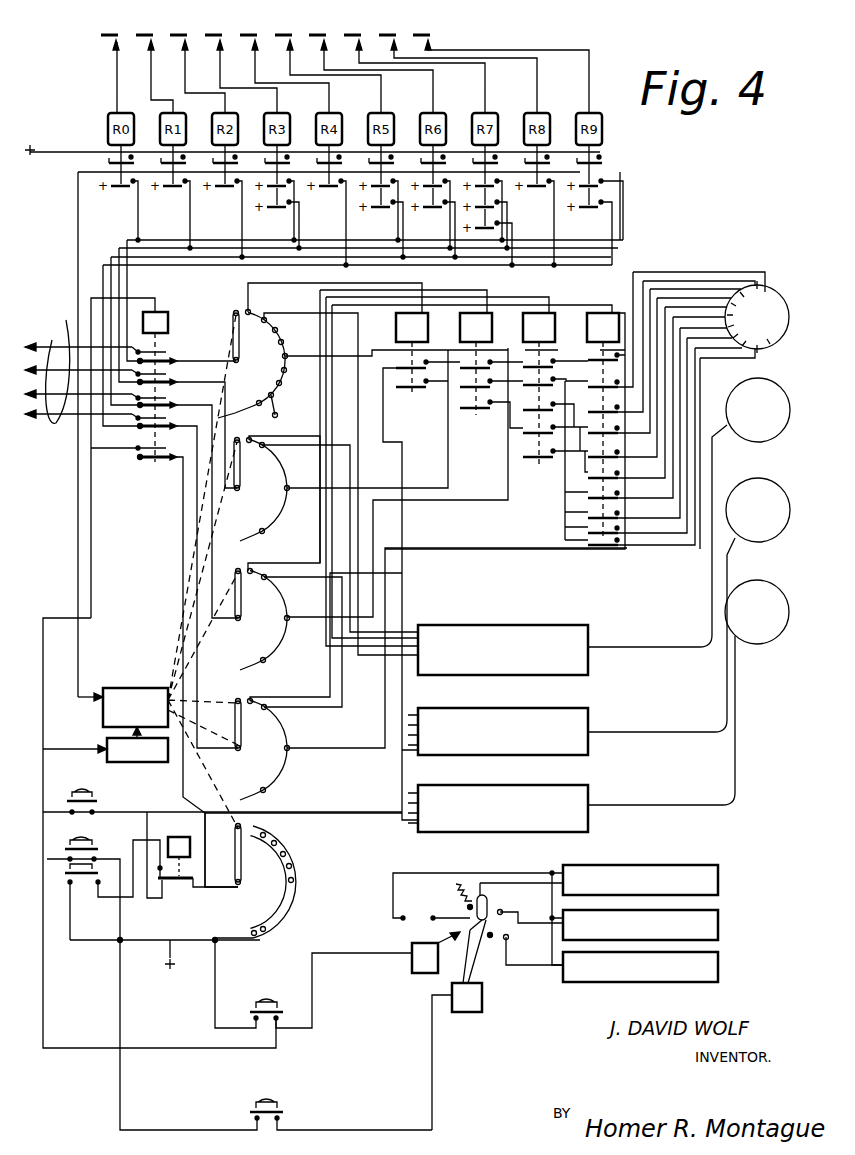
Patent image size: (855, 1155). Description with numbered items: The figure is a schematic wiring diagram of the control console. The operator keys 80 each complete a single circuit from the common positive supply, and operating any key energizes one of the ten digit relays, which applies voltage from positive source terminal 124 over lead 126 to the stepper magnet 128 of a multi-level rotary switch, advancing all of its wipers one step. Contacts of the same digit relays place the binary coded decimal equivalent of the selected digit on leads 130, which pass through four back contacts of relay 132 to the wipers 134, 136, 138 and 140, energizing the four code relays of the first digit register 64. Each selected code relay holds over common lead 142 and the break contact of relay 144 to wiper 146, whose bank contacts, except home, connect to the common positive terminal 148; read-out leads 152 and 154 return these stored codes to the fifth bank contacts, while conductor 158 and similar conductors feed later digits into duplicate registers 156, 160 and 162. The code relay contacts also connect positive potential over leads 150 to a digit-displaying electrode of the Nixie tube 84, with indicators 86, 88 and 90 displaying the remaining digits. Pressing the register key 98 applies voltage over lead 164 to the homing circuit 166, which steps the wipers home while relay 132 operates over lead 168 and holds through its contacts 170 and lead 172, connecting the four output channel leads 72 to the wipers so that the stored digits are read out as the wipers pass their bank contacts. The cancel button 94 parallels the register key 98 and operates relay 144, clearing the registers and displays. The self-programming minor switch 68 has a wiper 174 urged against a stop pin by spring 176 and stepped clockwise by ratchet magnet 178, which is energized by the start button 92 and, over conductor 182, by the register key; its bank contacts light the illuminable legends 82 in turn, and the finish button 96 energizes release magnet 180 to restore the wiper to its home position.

The operator keys 80 is at (438, 36).
The positive source terminal 124 is at (72, 148).
The lead 126 is at (78, 206).
The leads 130 is at (150, 240).
The output channel leads 72 is at (81, 368).
The relay 132 is at (168, 322).
The holding contacts 170 is at (122, 456).
The lead 172 is at (183, 570).
The wiper 134 is at (240, 330).
The wiper 136 is at (240, 456).
The wiper 138 is at (240, 584).
The wiper 140 is at (240, 716).
The wiper 146 is at (241, 853).
The stepper magnet 128 is at (145, 688).
The homing circuit 166 is at (165, 762).
The lead 164 is at (90, 749).
The lead 168 is at (55, 618).
The conductor 182 is at (43, 1000).
The register key 98 is at (102, 797).
The cancel button 94 is at (100, 848).
The relay 144 is at (167, 843).
The common positive potential terminal 148 is at (163, 985).
The start button 92 is at (255, 982).
The finish button 96 is at (288, 1104).
The lead 152 is at (374, 354).
The register relay circuitry 64 is at (563, 292).
The common lead 142 is at (384, 413).
The lead 154 is at (452, 460).
The conductor 158 is at (388, 473).
The register 156 is at (570, 625).
The register 160 is at (575, 712).
The register 162 is at (575, 790).
The leads 150 is at (706, 272).
The Nixie tube 84 is at (778, 311).
The indicator 86 is at (783, 402).
The indicator 88 is at (783, 503).
The indicator 90 is at (782, 605).
The illuminable legends 82 is at (738, 960).
The minor switch 68 is at (514, 980).
The wiper 174 is at (488, 910).
The spring 176 is at (482, 882).
The ratchet magnet 178 is at (412, 963).
The release magnet 180 is at (482, 1000).